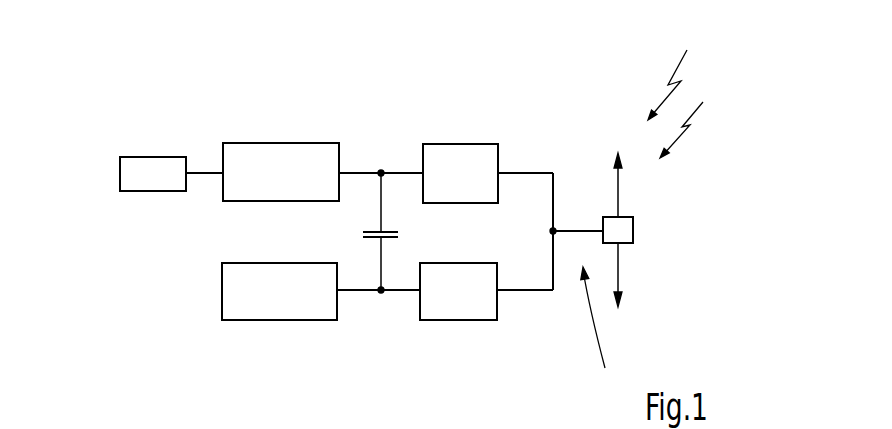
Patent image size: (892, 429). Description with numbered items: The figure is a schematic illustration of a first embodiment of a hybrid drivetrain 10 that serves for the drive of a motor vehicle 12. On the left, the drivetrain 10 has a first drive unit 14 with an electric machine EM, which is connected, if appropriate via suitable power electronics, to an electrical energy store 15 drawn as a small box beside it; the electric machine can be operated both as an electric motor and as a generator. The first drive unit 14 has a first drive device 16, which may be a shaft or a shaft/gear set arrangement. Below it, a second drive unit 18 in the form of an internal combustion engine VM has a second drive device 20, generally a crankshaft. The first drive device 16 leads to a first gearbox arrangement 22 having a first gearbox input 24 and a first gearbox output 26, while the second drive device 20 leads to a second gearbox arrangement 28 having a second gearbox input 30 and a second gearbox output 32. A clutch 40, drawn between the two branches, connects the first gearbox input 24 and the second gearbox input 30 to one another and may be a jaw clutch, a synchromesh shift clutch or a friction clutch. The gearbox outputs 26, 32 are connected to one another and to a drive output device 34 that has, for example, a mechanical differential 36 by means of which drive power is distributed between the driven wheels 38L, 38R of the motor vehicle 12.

The drivetrain 10 is at (695, 121).
The motor vehicle 12 is at (678, 73).
The first drive unit 14 is at (285, 143).
The electrical energy store 15 is at (157, 157).
The first drive device 16 is at (360, 173).
The second drive unit 18 is at (269, 263).
The second drive device 20 is at (362, 290).
The first gearbox arrangement 22 is at (460, 144).
The first gearbox input 24 is at (403, 173).
The first gearbox output 26 is at (525, 173).
The second gearbox arrangement 28 is at (453, 320).
The second gearbox input 30 is at (400, 290).
The second gearbox output 32 is at (523, 290).
The drive output device 34 is at (603, 327).
The mechanical differential 36 is at (635, 232).
The driven wheel 38R is at (620, 192).
The driven wheel 38L is at (622, 268).
The clutch 40 is at (392, 232).